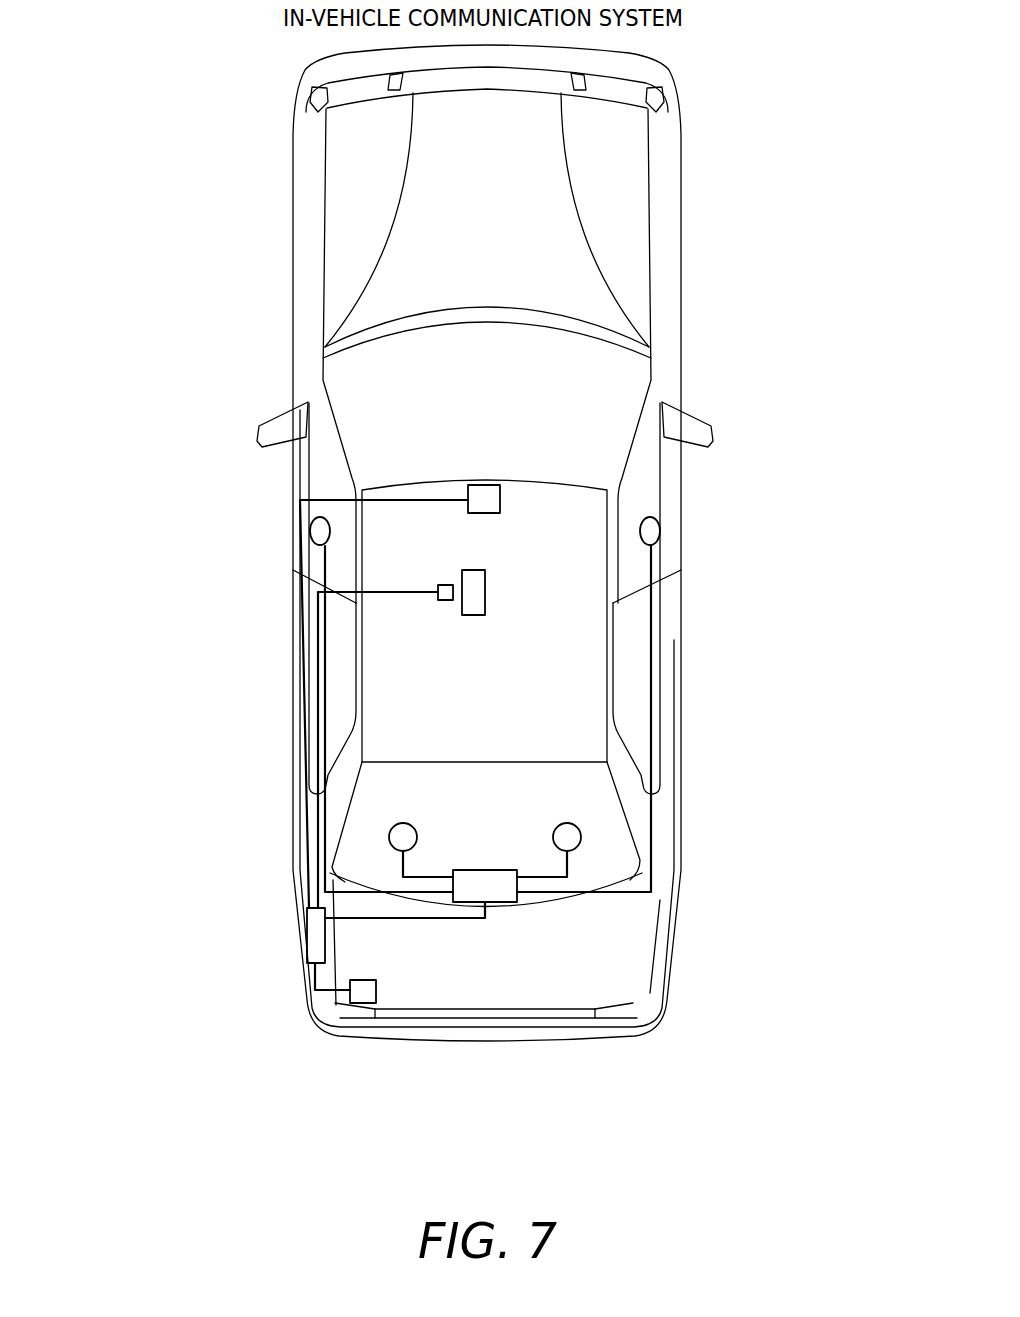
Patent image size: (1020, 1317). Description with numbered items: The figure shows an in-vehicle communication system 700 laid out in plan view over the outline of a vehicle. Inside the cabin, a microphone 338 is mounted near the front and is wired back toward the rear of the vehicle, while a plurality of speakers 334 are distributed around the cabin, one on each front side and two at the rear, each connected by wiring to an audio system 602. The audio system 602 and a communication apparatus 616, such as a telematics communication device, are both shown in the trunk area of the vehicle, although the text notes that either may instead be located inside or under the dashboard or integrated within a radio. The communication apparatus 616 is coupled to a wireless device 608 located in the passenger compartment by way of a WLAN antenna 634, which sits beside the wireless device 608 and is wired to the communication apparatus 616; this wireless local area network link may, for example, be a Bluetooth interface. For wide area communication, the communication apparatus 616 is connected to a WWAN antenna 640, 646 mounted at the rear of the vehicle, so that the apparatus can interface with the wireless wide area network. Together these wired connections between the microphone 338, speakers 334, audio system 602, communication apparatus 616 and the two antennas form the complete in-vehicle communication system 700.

The in-vehicle communication system 700 is at (808, 186).
The microphone 338 is at (487, 485).
The speaker 334 is at (310, 531).
The WLAN antenna 634 is at (447, 585).
The wireless device 608 is at (477, 617).
The audio system 602 is at (503, 925).
The communication apparatus 616 is at (307, 935).
The WWAN antenna 640 is at (366, 1058).
The WWAN antenna 646 is at (365, 1003).